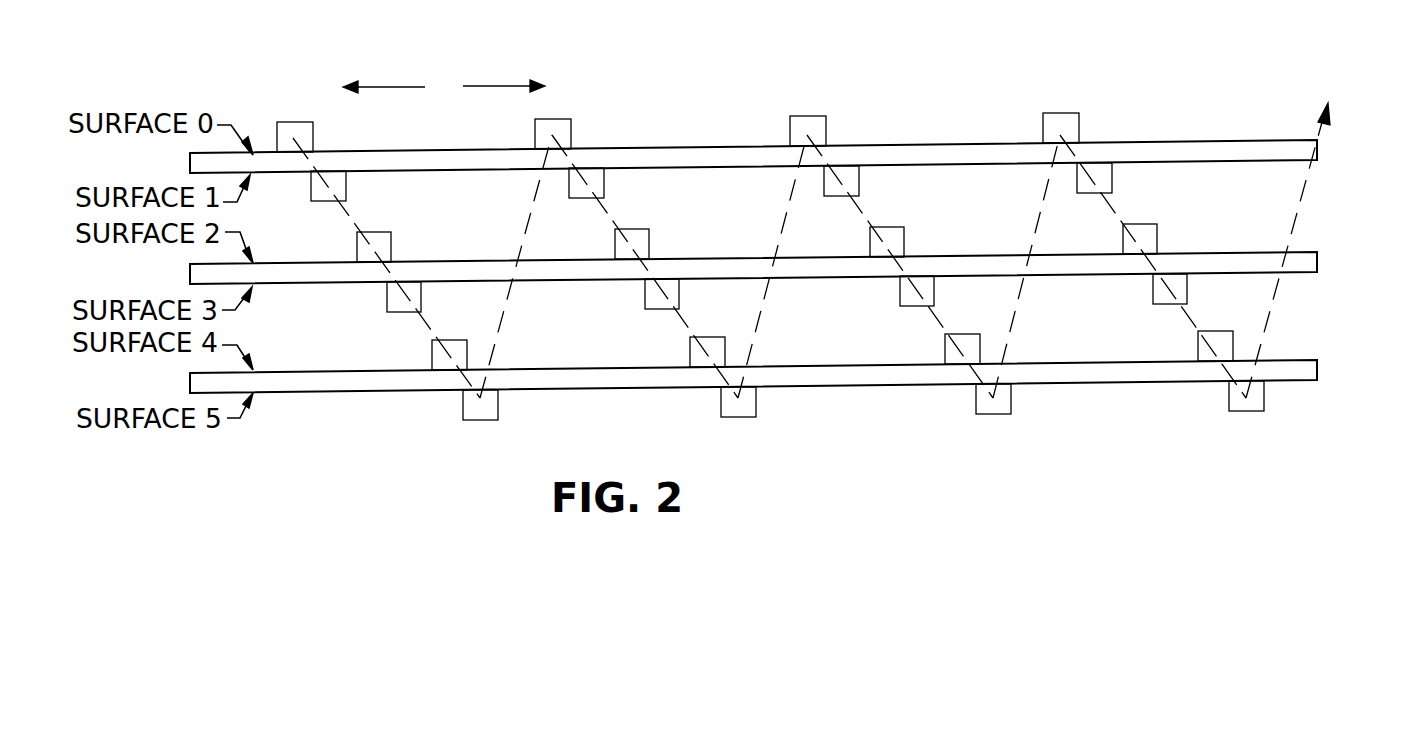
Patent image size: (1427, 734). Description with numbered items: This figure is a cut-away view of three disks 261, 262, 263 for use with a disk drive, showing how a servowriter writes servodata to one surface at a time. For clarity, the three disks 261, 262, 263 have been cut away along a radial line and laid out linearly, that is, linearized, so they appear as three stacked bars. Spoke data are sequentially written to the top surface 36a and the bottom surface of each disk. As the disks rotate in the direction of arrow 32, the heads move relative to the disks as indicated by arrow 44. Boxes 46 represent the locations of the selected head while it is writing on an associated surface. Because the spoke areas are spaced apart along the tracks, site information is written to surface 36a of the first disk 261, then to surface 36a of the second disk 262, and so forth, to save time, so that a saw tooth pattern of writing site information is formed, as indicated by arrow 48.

The first disk 261 is at (1317, 150).
The second disk 262 is at (1317, 260).
The third disk 263 is at (1317, 368).
The arrow 32 is at (384, 74).
The arrow 44 is at (504, 74).
The top surface 36a is at (633, 148).
The boxes 46 is at (1148, 222).
The arrow 48 is at (507, 306).